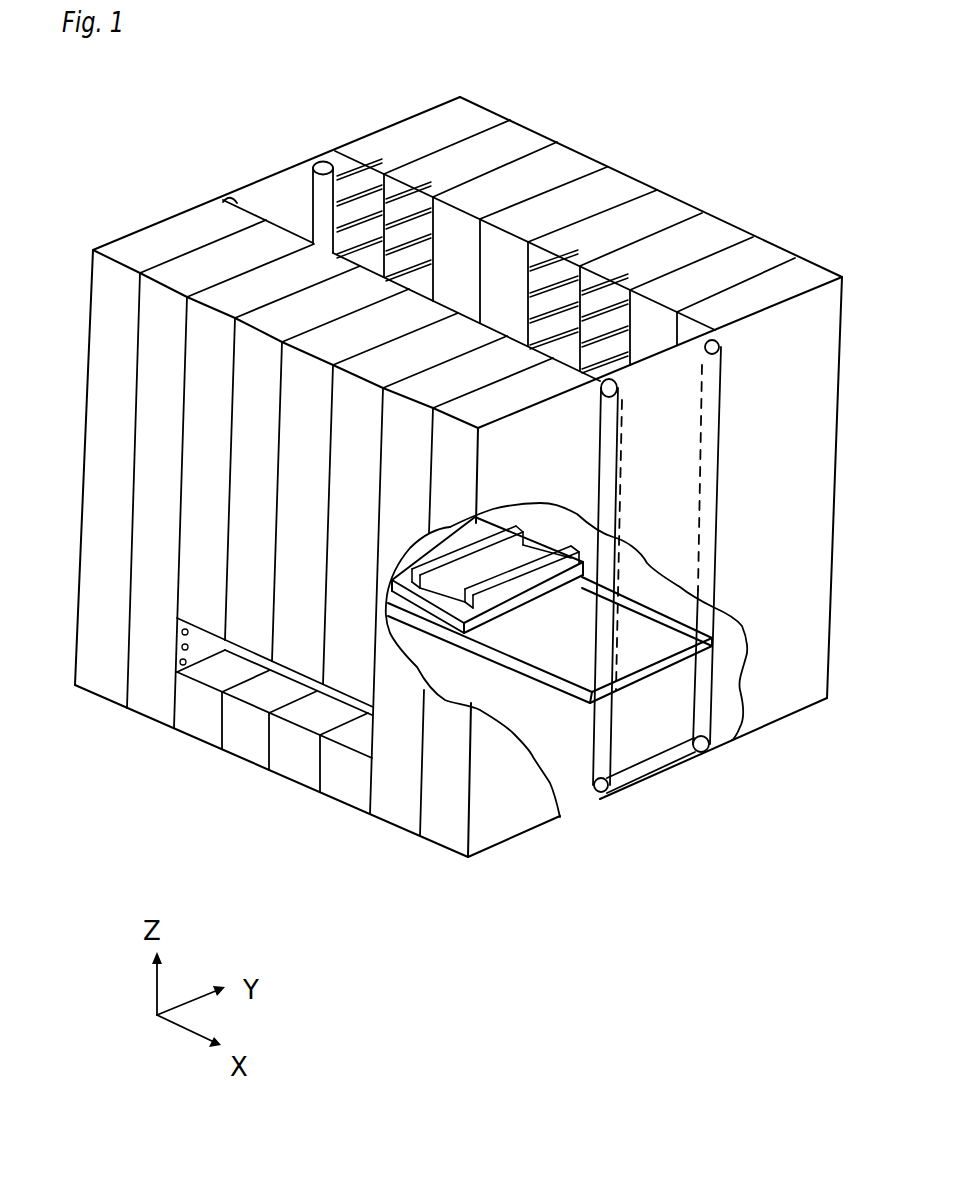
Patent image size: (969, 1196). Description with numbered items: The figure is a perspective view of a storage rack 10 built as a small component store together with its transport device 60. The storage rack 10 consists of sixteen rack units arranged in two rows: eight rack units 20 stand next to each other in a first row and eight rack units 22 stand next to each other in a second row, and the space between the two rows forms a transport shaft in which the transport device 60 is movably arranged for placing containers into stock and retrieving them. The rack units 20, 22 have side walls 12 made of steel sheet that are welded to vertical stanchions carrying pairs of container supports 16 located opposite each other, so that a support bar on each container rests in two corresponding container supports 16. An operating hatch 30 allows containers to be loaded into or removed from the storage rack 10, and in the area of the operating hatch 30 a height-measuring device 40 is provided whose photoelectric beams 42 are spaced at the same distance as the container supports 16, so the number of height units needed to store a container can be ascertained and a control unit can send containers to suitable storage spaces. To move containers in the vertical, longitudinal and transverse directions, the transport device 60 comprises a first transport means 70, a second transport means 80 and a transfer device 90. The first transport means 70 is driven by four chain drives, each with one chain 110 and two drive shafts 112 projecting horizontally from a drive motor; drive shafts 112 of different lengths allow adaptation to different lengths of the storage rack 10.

The storage rack 10 is at (228, 121).
The side wall 12 is at (348, 164).
The container support 16 is at (368, 188).
The rack unit 20 is at (162, 228).
The rack unit 22 is at (428, 122).
The operating hatch 30 is at (259, 690).
The height-measuring device 40 is at (161, 636).
The photoelectric beam 42 is at (176, 648).
The transport device 60 is at (550, 668).
The first transport means 70 is at (497, 667).
The second transport means 80 is at (530, 598).
The transfer device 90 is at (544, 530).
The chain 110 is at (658, 768).
The drive shaft 112 is at (612, 797).